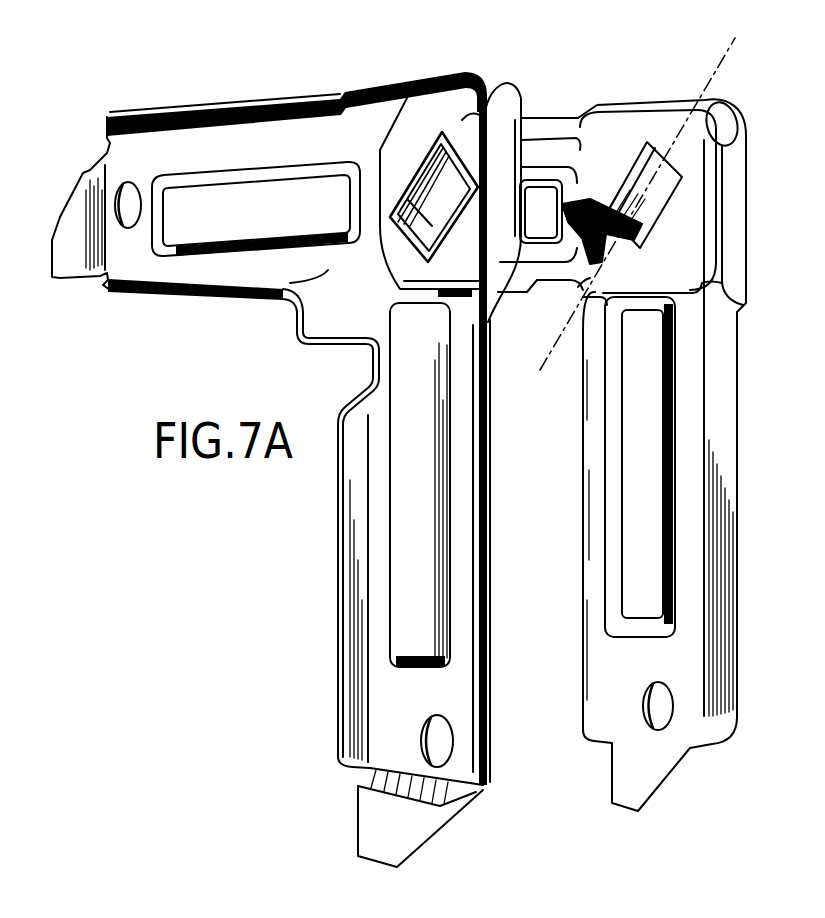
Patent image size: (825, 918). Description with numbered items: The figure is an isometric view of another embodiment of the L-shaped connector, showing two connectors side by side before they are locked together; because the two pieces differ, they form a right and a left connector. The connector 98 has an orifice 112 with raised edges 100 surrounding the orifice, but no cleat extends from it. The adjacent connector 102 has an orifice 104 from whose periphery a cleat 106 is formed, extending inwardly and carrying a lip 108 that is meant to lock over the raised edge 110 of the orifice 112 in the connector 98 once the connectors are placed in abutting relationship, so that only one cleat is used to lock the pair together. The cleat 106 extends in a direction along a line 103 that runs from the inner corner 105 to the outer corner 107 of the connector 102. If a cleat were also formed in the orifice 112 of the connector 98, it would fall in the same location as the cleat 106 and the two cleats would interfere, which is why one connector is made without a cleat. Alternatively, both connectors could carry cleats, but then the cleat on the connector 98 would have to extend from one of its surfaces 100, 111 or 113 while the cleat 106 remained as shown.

The connector 98 is at (430, 76).
The raised edges 100 is at (432, 160).
The adjacent connector 102 is at (637, 100).
The line 103 is at (734, 45).
The orifice 104 is at (625, 188).
The inner corner 105 is at (578, 287).
The cleat 106 is at (627, 217).
The outer corner 107 is at (732, 103).
The lip 108 is at (577, 232).
The raised edge 110 is at (398, 270).
The surface 111 is at (467, 143).
The orifice 112 is at (432, 208).
The surface 113 is at (464, 214).